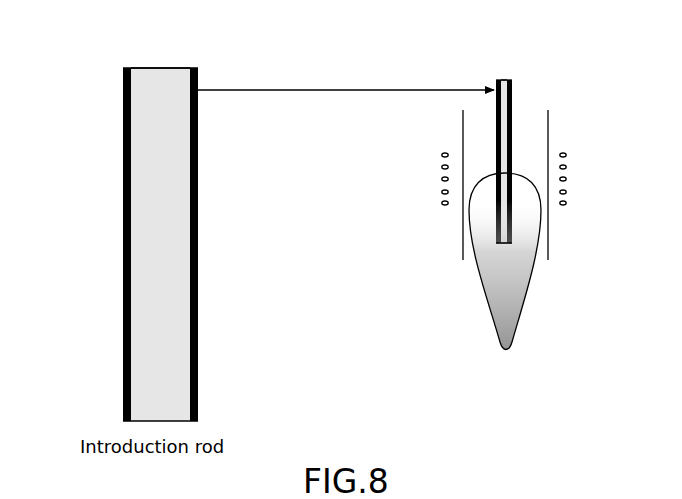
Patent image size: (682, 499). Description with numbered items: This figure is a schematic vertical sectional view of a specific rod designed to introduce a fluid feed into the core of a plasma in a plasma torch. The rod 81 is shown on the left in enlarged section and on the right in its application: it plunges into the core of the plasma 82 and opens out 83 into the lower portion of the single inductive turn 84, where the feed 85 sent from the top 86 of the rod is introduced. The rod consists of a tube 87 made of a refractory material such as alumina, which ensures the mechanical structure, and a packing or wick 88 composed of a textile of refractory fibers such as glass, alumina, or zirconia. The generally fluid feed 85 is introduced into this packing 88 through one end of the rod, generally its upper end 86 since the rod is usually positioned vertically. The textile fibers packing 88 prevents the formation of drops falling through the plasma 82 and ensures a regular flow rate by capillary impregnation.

The rod 81 is at (216, 359).
The plasma 82 is at (537, 304).
The opening of the rod 83 is at (513, 245).
The inductive turn 84 is at (572, 176).
The feed 85 is at (158, 66).
The top of the rod 86 is at (181, 68).
The tube 87 is at (121, 101).
The packing or wick 88 is at (160, 219).